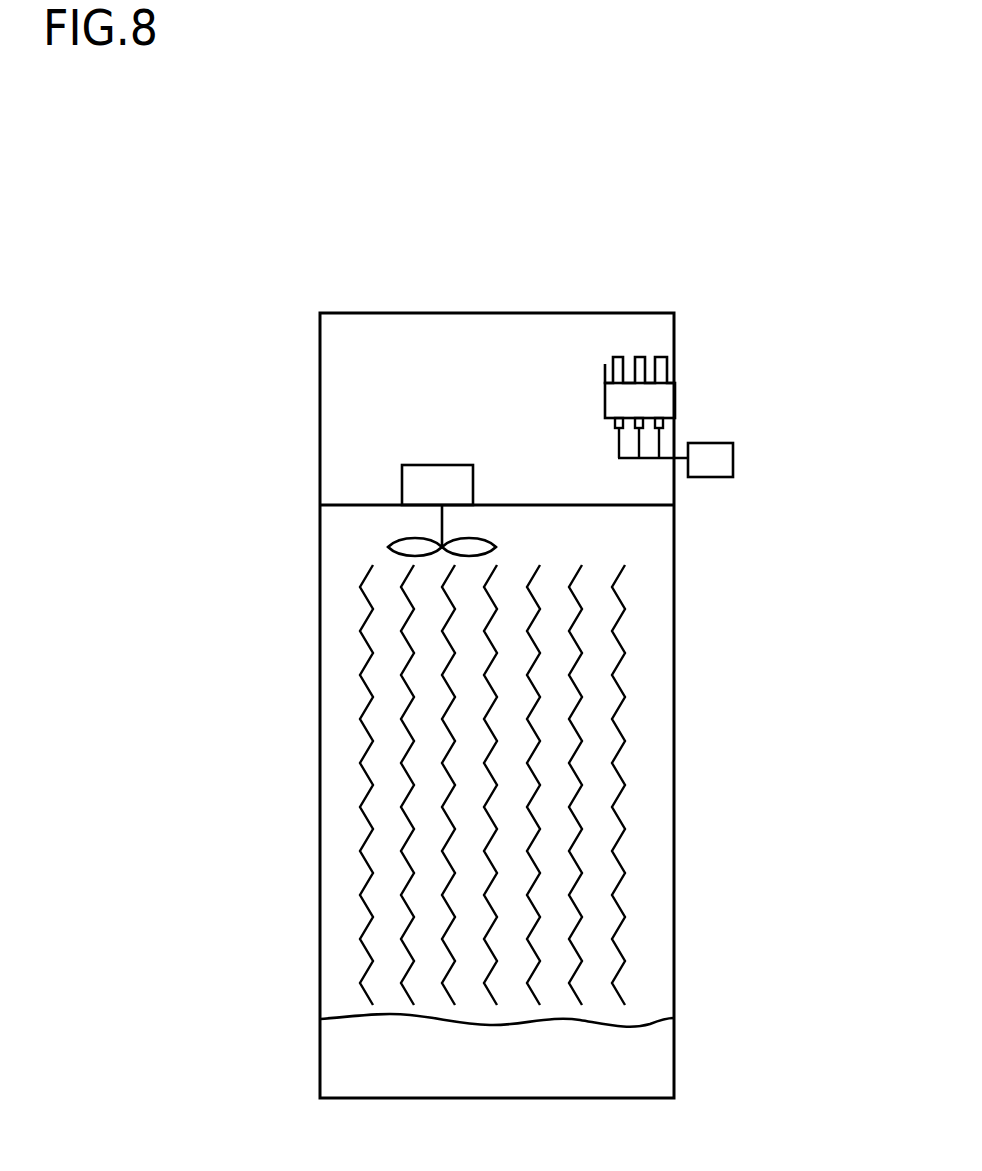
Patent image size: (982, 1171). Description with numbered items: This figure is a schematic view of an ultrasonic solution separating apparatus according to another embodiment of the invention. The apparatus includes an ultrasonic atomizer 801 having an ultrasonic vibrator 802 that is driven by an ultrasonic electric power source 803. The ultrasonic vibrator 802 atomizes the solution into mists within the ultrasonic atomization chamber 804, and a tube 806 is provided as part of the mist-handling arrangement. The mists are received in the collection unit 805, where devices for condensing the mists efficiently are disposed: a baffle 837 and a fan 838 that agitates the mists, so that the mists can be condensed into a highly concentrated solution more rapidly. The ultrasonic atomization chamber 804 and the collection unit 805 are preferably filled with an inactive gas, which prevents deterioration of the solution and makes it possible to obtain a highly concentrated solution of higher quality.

The ultrasonic atomizer 801 is at (648, 470).
The ultrasonic vibrator 802 is at (665, 420).
The ultrasonic electric power source 803 is at (733, 458).
The ultrasonic atomization chamber 804 is at (678, 365).
The collection unit 805 is at (345, 762).
The tube 806 is at (654, 366).
The baffle 837 is at (363, 905).
The fan 838 is at (475, 537).